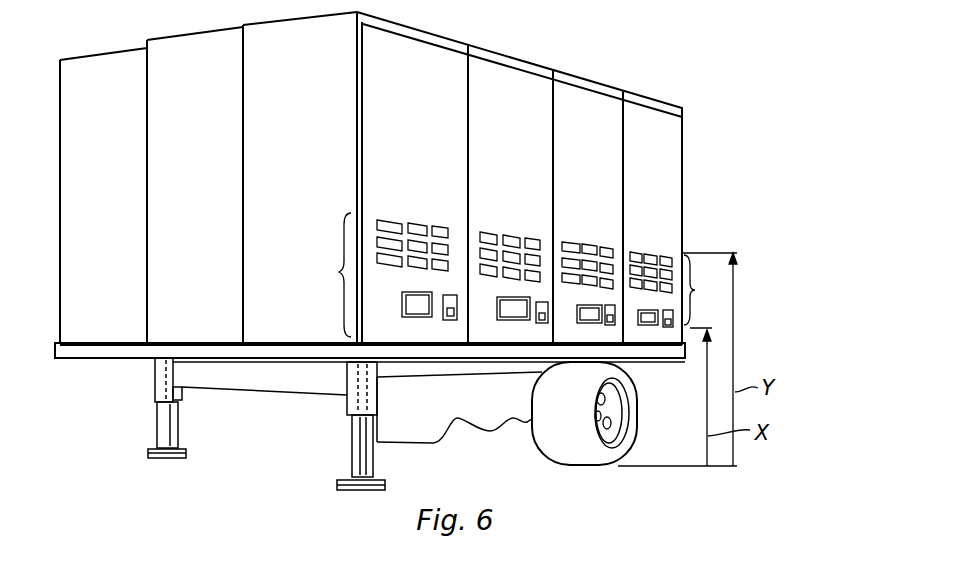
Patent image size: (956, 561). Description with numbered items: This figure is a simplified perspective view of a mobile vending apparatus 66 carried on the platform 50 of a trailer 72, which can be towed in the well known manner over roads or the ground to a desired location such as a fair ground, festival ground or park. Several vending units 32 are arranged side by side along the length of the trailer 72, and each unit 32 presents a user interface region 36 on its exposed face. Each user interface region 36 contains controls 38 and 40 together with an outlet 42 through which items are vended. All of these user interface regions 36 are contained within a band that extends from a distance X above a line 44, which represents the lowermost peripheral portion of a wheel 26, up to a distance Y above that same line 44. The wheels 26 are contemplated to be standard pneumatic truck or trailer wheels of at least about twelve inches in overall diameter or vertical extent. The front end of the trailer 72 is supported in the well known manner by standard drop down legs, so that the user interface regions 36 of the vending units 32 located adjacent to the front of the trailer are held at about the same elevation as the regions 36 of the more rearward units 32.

The mobile vending apparatus 66 is at (646, 76).
The vending unit 32 is at (399, 206).
The control 38 is at (437, 222).
The control 40 is at (382, 262).
The user interface region 36 is at (338, 272).
The outlet 42 is at (427, 298).
The trailer 72 is at (73, 358).
The platform 50 is at (118, 362).
The wheel 26 is at (548, 445).
The line 44 is at (665, 466).